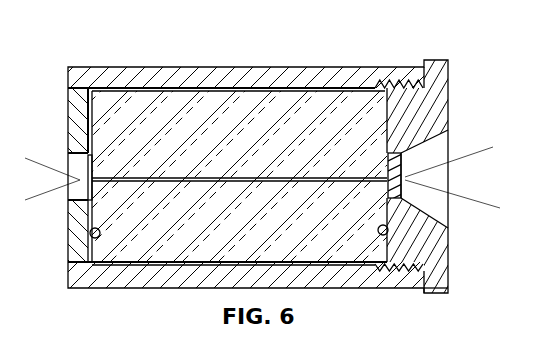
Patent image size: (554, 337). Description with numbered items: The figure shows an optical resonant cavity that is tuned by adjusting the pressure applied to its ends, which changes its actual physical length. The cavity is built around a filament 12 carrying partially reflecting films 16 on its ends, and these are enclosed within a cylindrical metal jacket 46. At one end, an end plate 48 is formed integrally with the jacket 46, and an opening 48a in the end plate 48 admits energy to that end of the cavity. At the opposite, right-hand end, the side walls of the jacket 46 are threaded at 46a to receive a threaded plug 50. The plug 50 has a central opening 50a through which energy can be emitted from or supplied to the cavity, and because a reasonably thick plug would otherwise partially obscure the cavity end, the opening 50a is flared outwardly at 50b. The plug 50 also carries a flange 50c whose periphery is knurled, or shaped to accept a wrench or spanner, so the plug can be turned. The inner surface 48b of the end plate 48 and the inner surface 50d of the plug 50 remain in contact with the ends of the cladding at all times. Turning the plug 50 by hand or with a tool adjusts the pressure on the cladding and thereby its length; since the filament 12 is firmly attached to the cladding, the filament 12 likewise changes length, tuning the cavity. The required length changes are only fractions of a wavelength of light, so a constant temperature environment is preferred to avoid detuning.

The filament 12 is at (263, 178).
The partially reflecting films 16 is at (88, 167).
The metal jacket 46 is at (263, 66).
The threads of jacket side walls 46a is at (412, 82).
The end plate 48 is at (70, 124).
The opening in end plate 48a is at (70, 188).
The inner surface of end plate 48b is at (72, 240).
The threaded plug 50 is at (449, 107).
The central opening of plug 50a is at (440, 177).
The flared portion of plug opening 50b is at (434, 220).
The flange of plug 50c is at (443, 288).
The inner surface of plug 50d is at (390, 236).